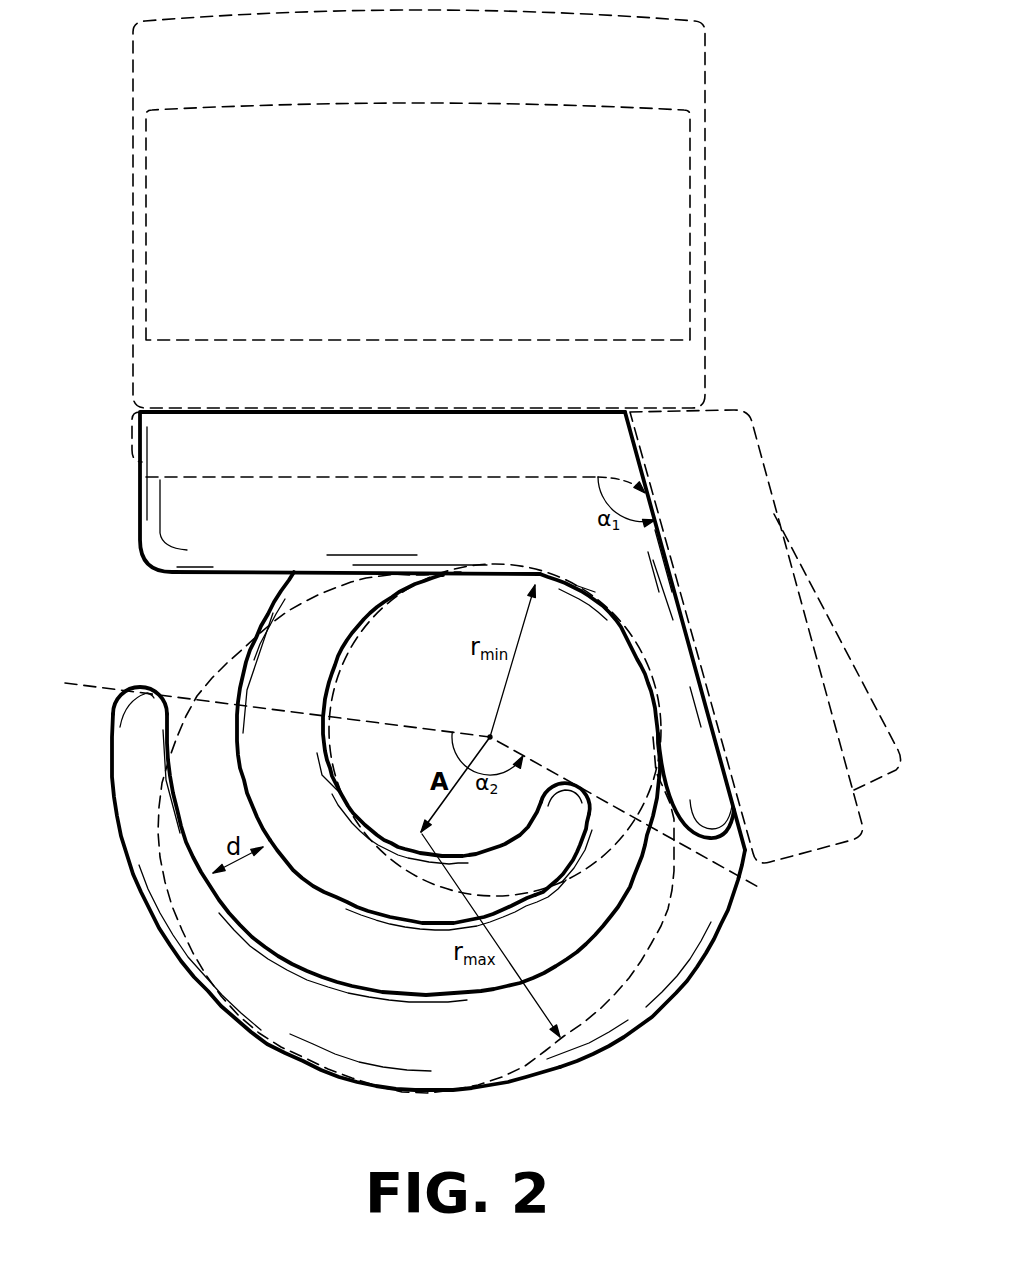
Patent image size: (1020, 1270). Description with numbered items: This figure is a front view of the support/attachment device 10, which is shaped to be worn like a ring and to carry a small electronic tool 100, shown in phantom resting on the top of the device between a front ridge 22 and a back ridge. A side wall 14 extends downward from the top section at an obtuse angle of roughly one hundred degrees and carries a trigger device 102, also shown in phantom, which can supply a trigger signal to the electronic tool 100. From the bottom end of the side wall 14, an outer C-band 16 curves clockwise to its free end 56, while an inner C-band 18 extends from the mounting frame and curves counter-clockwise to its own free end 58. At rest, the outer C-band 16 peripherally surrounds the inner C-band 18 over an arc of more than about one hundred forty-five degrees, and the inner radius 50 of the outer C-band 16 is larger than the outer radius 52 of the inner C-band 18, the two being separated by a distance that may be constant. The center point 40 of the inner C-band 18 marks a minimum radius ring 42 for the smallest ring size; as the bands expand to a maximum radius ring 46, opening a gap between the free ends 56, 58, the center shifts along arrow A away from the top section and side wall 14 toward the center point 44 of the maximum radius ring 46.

The support/attachment device 10 is at (762, 958).
The side wall 14 is at (658, 652).
The outer C-band 16 is at (123, 857).
The inner C-band 18 is at (272, 606).
The front ridge 22 is at (438, 517).
The center point 40 is at (490, 737).
The minimum radius ring 42 is at (587, 863).
The center point 44 is at (420, 836).
The maximum radius ring 46 is at (622, 983).
The inner radius 50 is at (410, 990).
The outer radius 52 is at (292, 873).
The free end 56 is at (140, 690).
The free end 58 is at (585, 788).
The electronic tool 100 is at (707, 207).
The trigger device 102 is at (762, 474).